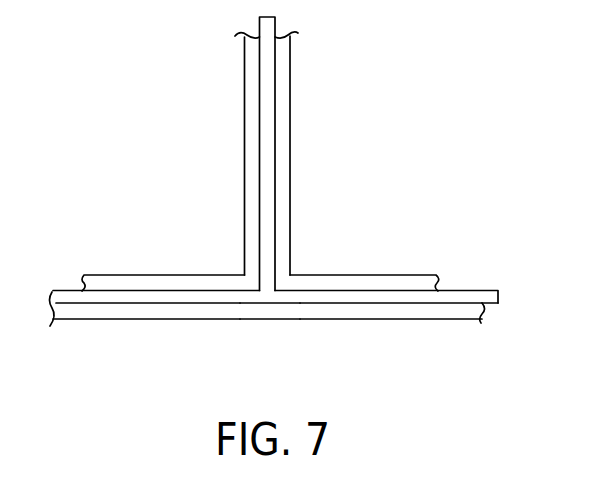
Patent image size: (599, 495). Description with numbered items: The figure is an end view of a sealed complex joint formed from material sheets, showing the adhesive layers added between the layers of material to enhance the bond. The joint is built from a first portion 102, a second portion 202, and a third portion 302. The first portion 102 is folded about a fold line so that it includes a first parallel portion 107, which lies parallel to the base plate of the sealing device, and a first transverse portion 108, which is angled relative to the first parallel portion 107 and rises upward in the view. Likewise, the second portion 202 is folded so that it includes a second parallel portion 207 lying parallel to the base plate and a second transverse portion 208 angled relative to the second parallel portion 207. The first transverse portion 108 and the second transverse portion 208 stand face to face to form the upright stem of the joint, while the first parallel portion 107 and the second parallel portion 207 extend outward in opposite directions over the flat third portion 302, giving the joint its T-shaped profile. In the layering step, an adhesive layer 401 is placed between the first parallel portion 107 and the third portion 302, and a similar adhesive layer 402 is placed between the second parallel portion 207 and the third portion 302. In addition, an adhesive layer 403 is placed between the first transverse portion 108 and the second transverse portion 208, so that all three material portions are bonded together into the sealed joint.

The first portion 102 is at (156, 162).
The first parallel portion 107 is at (131, 275).
The first transverse portion 108 is at (244, 96).
The second portion 202 is at (386, 167).
The second parallel portion 207 is at (381, 275).
The second transverse portion 208 is at (291, 96).
The third portion 302 is at (273, 310).
The adhesive layer 401 is at (159, 305).
The adhesive layer 402 is at (383, 305).
The adhesive layer 403 is at (276, 150).